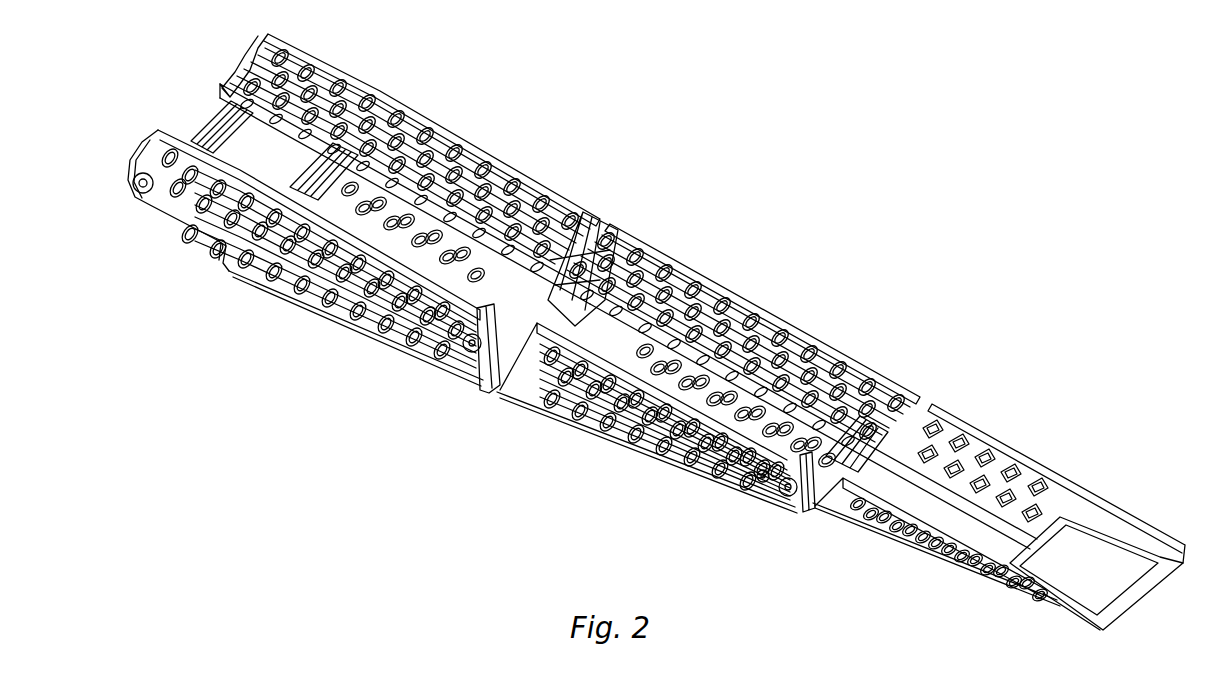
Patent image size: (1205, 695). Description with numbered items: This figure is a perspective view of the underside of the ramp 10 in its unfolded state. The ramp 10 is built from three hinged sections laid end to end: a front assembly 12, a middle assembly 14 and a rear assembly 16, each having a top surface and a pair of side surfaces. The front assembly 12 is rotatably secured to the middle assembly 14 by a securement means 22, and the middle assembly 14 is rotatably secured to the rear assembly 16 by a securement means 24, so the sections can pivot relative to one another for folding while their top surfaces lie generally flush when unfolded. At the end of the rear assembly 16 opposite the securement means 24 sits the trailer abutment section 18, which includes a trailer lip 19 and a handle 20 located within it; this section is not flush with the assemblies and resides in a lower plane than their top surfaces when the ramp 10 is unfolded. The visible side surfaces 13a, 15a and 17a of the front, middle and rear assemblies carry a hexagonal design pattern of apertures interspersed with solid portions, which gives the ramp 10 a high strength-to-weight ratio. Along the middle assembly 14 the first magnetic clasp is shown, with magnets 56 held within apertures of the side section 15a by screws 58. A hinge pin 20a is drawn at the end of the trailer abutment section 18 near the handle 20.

The ramp 10 is at (241, 516).
The front assembly 12 is at (1030, 460).
The side surface 13a is at (907, 538).
The middle assembly 14 is at (737, 293).
The side surface 15a is at (656, 446).
The rear assembly 16 is at (410, 156).
The side surface 17a is at (402, 340).
The trailer abutment section 18 is at (277, 270).
The trailer lip 19 is at (224, 262).
The handle 20 is at (200, 117).
The hinge pin 20a is at (140, 172).
The securement means 22 is at (845, 440).
The securement means 24 is at (543, 287).
The magnets 56 is at (763, 482).
The screws 58 is at (302, 77).